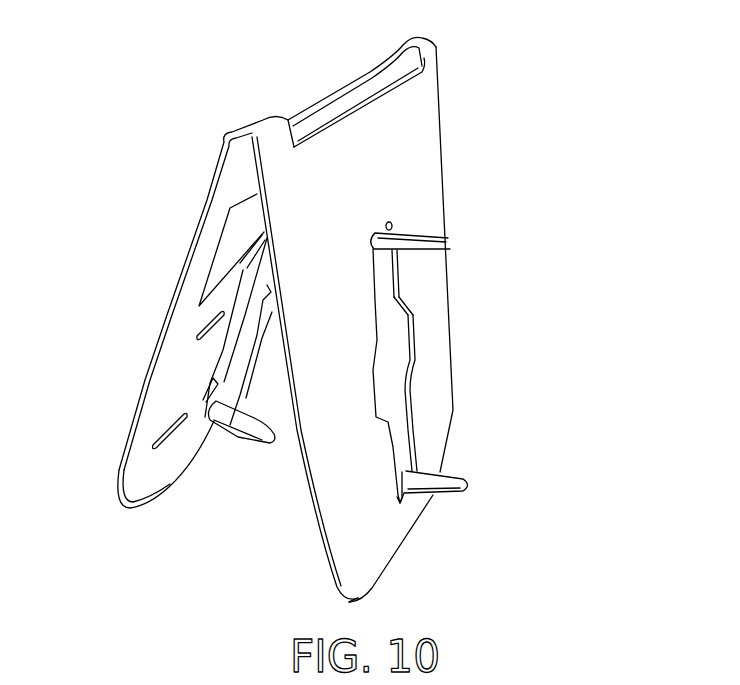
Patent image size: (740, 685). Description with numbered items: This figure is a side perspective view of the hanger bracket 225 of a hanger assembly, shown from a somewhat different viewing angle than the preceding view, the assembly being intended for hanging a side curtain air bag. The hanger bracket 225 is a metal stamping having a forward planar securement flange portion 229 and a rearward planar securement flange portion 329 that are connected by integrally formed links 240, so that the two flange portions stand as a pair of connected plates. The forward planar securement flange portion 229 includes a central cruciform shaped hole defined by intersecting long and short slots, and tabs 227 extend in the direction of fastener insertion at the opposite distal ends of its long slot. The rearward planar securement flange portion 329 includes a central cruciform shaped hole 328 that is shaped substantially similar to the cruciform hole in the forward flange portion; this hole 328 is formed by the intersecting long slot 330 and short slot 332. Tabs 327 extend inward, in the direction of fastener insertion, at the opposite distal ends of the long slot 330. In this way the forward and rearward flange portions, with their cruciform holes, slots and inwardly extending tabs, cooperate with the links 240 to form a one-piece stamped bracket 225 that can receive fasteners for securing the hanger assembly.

The hanger bracket 225 is at (163, 315).
The tabs 227 is at (263, 413).
The forward planar securement flange portion 229 is at (153, 413).
The links 240 is at (266, 132).
The tabs 327 is at (427, 240).
The central cruciform shaped hole 328 is at (390, 353).
The rearward planar securement flange portion 329 is at (410, 163).
The long slot 330 is at (400, 297).
The short slot 332 is at (407, 363).